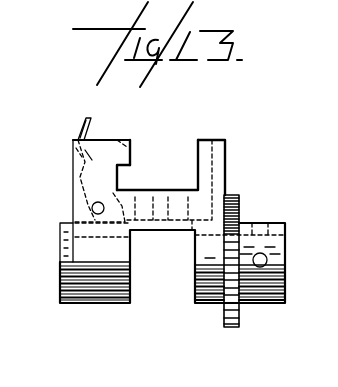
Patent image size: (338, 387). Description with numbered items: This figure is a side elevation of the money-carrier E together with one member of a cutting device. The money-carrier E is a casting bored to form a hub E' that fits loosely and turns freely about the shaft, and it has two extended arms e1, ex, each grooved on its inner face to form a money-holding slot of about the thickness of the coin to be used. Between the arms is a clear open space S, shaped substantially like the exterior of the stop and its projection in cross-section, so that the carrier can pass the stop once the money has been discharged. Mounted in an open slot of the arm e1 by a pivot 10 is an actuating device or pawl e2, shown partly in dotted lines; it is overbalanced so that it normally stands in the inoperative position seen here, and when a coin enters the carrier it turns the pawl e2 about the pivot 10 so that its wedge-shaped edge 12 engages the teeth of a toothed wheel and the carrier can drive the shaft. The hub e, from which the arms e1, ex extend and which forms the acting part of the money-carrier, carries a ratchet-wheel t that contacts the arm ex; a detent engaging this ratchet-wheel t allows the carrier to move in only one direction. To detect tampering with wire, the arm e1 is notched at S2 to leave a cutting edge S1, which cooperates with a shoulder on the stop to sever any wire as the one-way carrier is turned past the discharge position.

The wedge-shaped edge 12 is at (80, 131).
The extended arm e1 is at (88, 153).
The actuating device or pawl e2 is at (76, 152).
The pivot 10 is at (98, 202).
The money-carrier E is at (122, 201).
The cutting edge S1 is at (147, 152).
The notch S2 is at (137, 178).
The space S is at (157, 165).
The extended arm ex is at (230, 167).
The ratchet-wheel t is at (239, 202).
The hub E' is at (46, 250).
The hub e is at (98, 304).